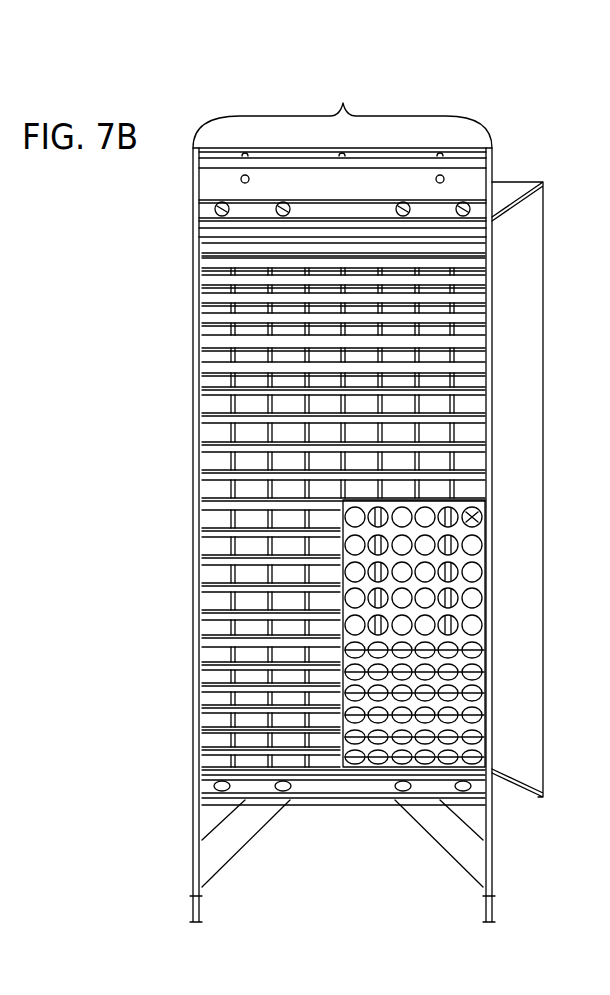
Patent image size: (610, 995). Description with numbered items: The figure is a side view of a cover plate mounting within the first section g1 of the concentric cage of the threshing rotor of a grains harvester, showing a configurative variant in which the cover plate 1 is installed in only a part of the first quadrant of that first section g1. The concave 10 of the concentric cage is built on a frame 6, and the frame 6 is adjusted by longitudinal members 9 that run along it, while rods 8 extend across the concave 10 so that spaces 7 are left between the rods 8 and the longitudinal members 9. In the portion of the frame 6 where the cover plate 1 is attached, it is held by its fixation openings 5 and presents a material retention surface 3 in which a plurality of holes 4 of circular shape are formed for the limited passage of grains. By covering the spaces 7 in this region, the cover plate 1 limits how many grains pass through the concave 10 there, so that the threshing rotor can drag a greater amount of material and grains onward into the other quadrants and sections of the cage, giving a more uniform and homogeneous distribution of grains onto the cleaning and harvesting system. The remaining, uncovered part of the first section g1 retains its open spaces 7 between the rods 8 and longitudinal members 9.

The cover plate 1 is at (0, 508).
The material retention surface 3 is at (477, 598).
The holes 4 is at (479, 680).
The fixation openings 5 is at (480, 523).
The frame 6 is at (198, 688).
The spaces 7 is at (246, 519).
The rods 8 is at (218, 642).
The longitudinal members 9 is at (232, 402).
The concave 10 is at (173, 308).
The first section g1 is at (342, 111).